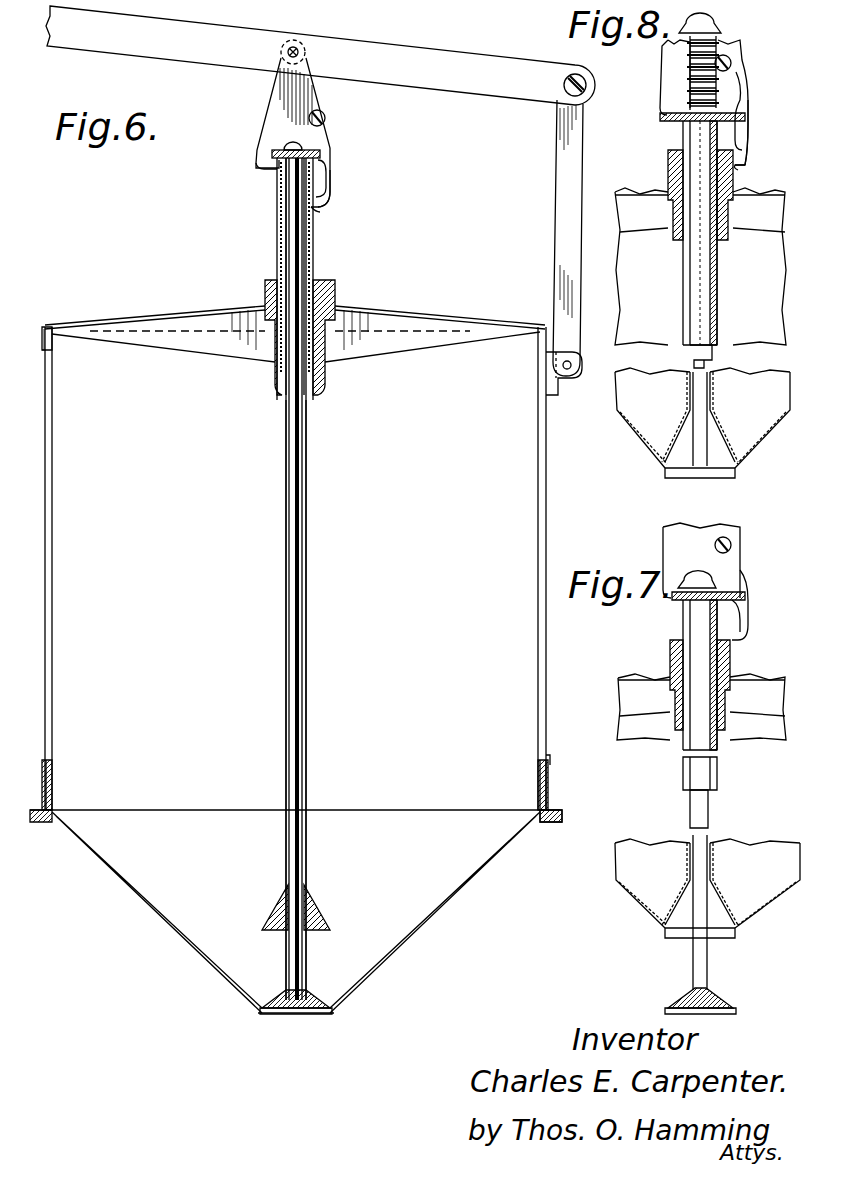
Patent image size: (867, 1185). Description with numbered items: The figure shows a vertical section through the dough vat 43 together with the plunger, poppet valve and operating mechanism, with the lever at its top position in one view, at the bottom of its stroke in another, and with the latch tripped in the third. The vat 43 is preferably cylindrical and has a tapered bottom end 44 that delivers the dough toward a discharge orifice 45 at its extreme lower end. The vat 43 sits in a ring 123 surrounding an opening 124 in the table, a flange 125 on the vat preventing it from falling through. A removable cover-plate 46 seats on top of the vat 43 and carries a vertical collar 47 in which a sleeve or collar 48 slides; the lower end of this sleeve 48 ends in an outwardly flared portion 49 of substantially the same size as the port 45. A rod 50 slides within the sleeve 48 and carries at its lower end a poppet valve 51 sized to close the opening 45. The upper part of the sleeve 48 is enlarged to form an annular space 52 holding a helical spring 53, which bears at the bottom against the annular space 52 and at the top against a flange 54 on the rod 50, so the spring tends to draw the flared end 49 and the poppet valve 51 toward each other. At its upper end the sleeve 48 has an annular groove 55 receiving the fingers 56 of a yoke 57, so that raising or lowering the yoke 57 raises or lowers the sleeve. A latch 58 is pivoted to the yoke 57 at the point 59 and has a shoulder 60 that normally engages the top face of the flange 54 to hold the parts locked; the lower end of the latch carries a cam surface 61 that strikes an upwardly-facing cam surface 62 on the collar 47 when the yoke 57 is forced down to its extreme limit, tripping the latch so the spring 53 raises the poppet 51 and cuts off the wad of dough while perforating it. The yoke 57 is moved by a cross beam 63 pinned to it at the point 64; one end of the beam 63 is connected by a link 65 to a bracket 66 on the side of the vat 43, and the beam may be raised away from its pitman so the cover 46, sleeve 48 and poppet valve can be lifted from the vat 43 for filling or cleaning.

In FIG. 6, the dough vat 43 is at (294, 568).
In FIG. 8, the dough vat 43 is at (648, 310).
In FIG. 7, the dough vat 43 is at (701, 707).
In FIG. 6, the tapered bottom end 44 is at (438, 905).
In FIG. 7, the tapered bottom end 44 is at (630, 905).
In FIG. 6, the discharge orifice 45 is at (328, 1014).
In FIG. 6, the cover-plate 46 is at (395, 318).
In FIG. 6, the vertical collar 47 is at (262, 358).
In FIG. 6, the collar 48 is at (308, 432).
In FIG. 6, the outwardly flared portion 49 is at (318, 895).
In FIG. 8, the outwardly flared portion 49 is at (728, 425).
In FIG. 7, the outwardly flared portion 49 is at (724, 898).
In FIG. 6, the rod 50 is at (308, 648).
In FIG. 8, the rod 50 is at (708, 364).
In FIG. 7, the rod 50 is at (710, 816).
In FIG. 6, the poppet valve 51 is at (292, 1010).
In FIG. 7, the poppet valve 51 is at (736, 1012).
In FIG. 6, the annular space 52 is at (314, 244).
In FIG. 8, the annular space 52 is at (690, 78).
In FIG. 6, the helical spring 53 is at (278, 190).
In FIG. 8, the helical spring 53 is at (719, 286).
In FIG. 7, the helical spring 53 is at (719, 772).
In FIG. 6, the flange 54 is at (284, 149).
In FIG. 8, the flange 54 is at (712, 25).
In FIG. 7, the flange 54 is at (693, 578).
In FIG. 6, the annular groove 55 is at (262, 168).
In FIG. 8, the fingers 56 is at (672, 124).
In FIG. 7, the fingers 56 is at (708, 596).
In FIG. 6, the yoke 57 is at (310, 90).
In FIG. 8, the yoke 57 is at (670, 64).
In FIG. 7, the yoke 57 is at (701, 560).
In FIG. 6, the latch 58 is at (332, 182).
In FIG. 8, the latch 58 is at (745, 132).
In FIG. 7, the latch 58 is at (746, 608).
In FIG. 6, the pivot point 59 is at (325, 118).
In FIG. 8, the pivot point 59 is at (723, 63).
In FIG. 6, the shoulder 60 is at (322, 152).
In FIG. 6, the cam surface 61 is at (322, 212).
In FIG. 8, the cam surface 61 is at (740, 168).
In FIG. 6, the upwardly-facing cam surface 62 is at (327, 276).
In FIG. 8, the upwardly-facing cam surface 62 is at (668, 160).
In FIG. 7, the upwardly-facing cam surface 62 is at (672, 644).
In FIG. 6, the cross beam 63 is at (487, 80).
In FIG. 6, the pin point 64 is at (303, 45).
In FIG. 6, the link 65 is at (556, 224).
In FIG. 6, the bracket 66 is at (552, 385).
In FIG. 6, the ring 123 is at (548, 780).
In FIG. 6, the opening 124 is at (550, 820).
In FIG. 6, the flange 125 is at (550, 760).